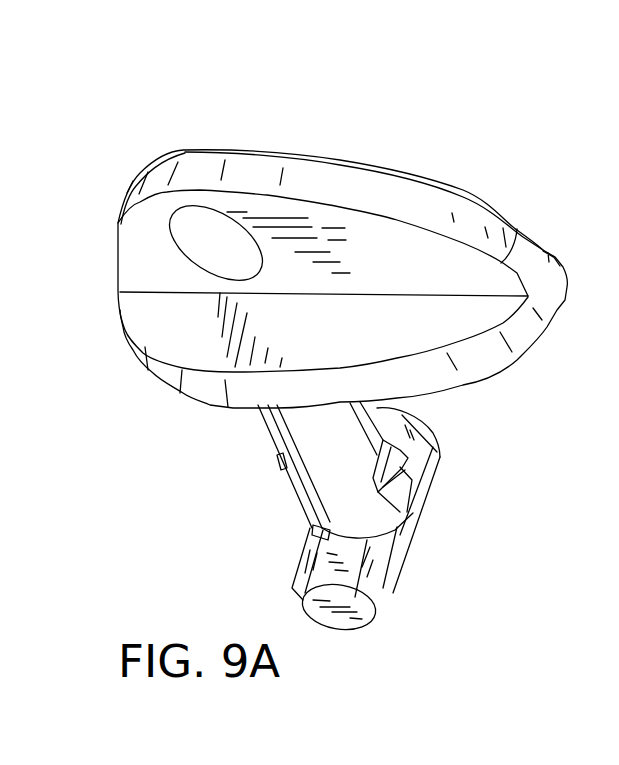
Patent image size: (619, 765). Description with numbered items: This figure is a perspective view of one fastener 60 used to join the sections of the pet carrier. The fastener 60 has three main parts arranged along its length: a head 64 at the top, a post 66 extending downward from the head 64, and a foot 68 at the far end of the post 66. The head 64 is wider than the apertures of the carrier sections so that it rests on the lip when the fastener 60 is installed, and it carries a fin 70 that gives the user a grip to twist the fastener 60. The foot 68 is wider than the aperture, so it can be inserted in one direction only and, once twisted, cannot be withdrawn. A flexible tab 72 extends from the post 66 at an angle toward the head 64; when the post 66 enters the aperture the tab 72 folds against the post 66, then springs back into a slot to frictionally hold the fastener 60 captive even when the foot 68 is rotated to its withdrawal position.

The fastener 60 is at (234, 133).
The head 64 is at (476, 180).
The fin 70 is at (343, 233).
The post 66 is at (311, 433).
The flexible tab 72 is at (421, 442).
The foot 68 is at (424, 557).